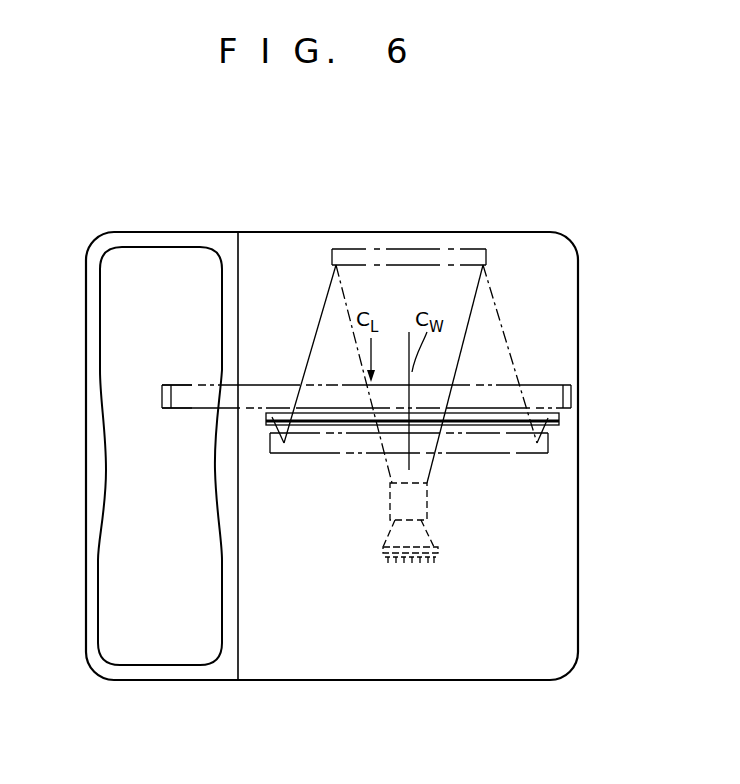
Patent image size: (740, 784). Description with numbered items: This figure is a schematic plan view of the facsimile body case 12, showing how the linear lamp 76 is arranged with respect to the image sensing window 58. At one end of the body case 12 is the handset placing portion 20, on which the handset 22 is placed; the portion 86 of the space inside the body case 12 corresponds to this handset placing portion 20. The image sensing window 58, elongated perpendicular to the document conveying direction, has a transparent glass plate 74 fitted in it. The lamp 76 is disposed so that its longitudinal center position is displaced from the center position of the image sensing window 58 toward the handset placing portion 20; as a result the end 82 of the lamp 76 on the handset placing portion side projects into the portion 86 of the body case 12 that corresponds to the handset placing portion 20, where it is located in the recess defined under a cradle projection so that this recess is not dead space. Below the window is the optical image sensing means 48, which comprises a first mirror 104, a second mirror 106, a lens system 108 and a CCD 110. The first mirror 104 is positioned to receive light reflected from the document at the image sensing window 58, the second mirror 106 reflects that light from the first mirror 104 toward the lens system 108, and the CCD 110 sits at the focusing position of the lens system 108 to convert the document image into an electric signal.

The body case 12 is at (586, 326).
The handset placing portion 20 is at (98, 407).
The handset 22 is at (127, 322).
The optical image sensing means 48 is at (522, 468).
The image sensing window 58 is at (560, 420).
The transparent glass plate 74 is at (465, 430).
The lamp 76 is at (547, 383).
The end of lamp 82 is at (190, 410).
The portion corresponding to handset placing portion 86 is at (226, 681).
The first mirror 104 is at (313, 456).
The second mirror 106 is at (347, 249).
The lens system 108 is at (428, 503).
The CCD 110 is at (440, 553).